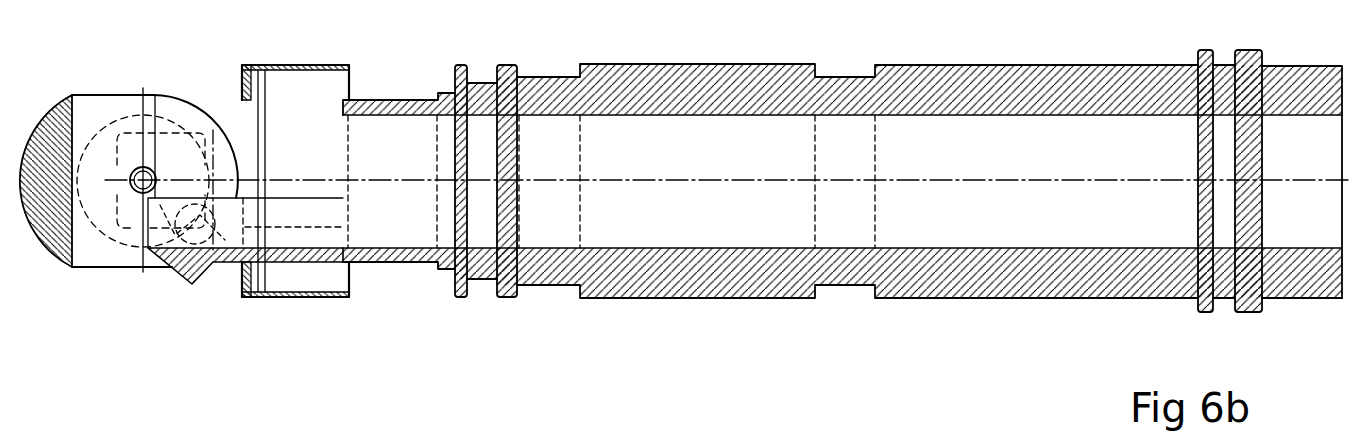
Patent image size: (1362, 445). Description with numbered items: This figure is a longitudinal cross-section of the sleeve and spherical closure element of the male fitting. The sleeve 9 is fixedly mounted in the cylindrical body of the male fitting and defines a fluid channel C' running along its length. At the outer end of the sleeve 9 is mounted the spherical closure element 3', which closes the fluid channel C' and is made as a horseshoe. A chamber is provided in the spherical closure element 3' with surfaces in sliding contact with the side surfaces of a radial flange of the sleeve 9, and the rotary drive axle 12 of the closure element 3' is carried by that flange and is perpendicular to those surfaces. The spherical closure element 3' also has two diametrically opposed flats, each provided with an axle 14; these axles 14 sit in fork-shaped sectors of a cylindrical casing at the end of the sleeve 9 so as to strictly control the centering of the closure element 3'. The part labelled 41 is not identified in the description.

The spherical closure element 3' is at (129, 144).
The axle 14 is at (148, 166).
The rotary drive axle 12 is at (160, 262).
The retaining nose 41 is at (203, 282).
The sleeve 9 is at (750, 299).
The fluid channel C' is at (727, 243).